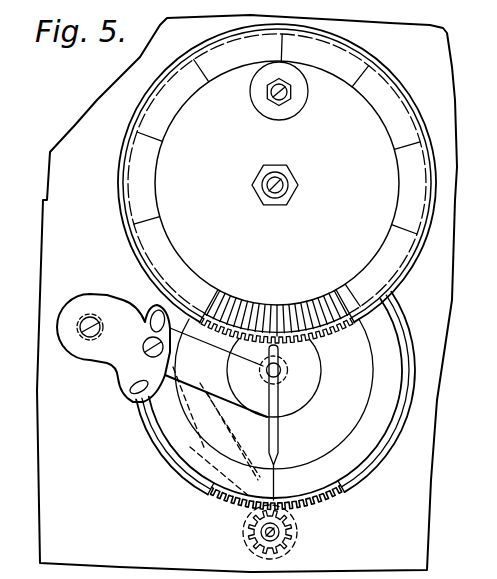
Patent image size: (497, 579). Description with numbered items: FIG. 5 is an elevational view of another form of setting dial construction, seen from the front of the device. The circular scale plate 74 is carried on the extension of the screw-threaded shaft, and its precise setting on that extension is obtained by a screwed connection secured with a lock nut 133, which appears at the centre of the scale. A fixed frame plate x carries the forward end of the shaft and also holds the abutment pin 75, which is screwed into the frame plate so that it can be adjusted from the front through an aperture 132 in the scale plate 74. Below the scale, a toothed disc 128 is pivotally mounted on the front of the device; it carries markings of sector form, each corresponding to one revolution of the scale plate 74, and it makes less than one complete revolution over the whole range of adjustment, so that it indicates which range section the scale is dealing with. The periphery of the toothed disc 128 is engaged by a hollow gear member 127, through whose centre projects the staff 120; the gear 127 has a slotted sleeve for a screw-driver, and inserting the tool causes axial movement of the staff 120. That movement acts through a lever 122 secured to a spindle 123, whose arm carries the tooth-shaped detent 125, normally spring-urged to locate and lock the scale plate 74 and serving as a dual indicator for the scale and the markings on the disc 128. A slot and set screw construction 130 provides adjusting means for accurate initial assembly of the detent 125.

The fixed frame plate x is at (107, 106).
The scale plate 74 is at (378, 63).
The abutment pin 75 is at (272, 102).
The aperture 132 is at (288, 121).
The lock nut 133 is at (285, 199).
The spindle 123 is at (91, 312).
The slot and set screw construction 130 is at (113, 376).
The lever 122 is at (170, 420).
The tooth-shaped detent 125 is at (279, 430).
The staff 120 is at (244, 539).
The hollow gear member 127 is at (292, 545).
The toothed disc 128 is at (348, 497).